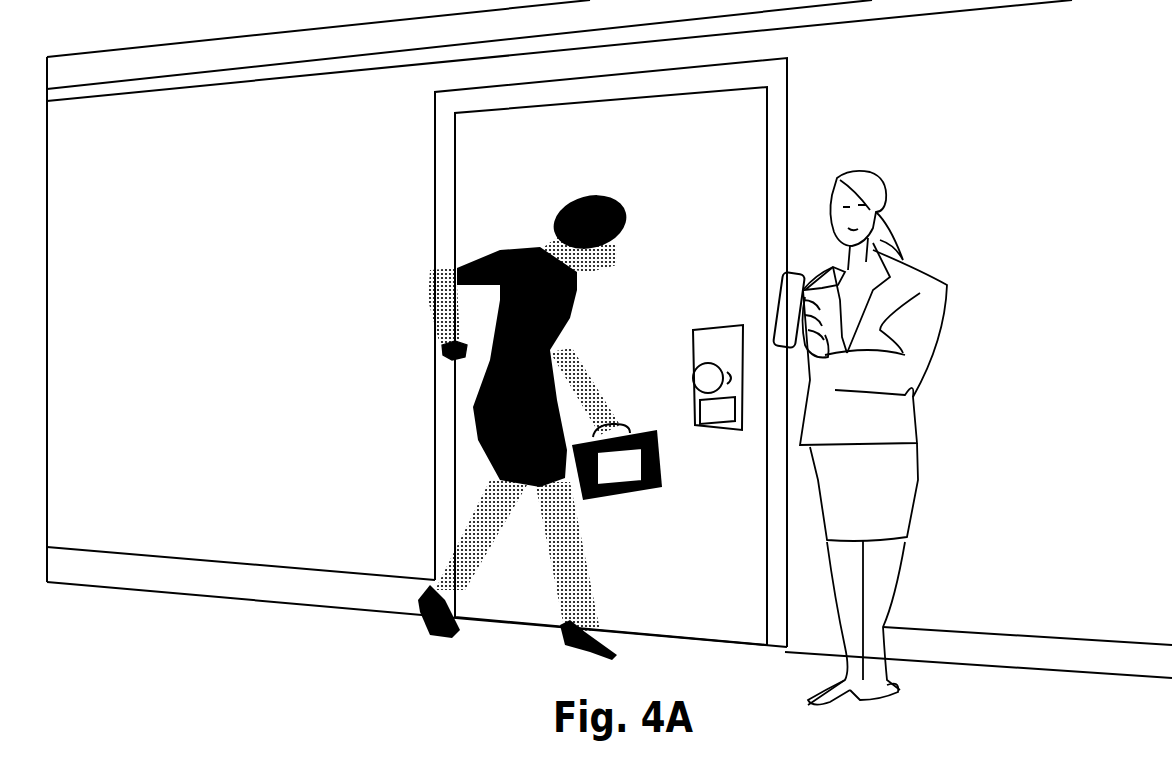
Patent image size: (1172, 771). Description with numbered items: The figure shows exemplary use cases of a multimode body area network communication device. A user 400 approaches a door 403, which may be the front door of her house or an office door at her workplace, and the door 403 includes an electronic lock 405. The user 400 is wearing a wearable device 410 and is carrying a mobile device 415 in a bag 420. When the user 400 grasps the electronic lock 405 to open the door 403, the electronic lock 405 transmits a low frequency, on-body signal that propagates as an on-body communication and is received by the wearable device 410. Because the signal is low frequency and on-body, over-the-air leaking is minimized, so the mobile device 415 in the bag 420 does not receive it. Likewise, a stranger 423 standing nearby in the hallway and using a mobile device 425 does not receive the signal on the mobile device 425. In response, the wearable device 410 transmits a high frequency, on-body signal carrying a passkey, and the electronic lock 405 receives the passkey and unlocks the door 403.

The user 400 is at (556, 210).
The door 403 is at (652, 122).
The electronic lock 405 is at (713, 345).
The wearable device 410 is at (447, 342).
The mobile device 415 is at (640, 477).
The bag 420 is at (633, 497).
The stranger 423 is at (882, 170).
The mobile device 425 is at (803, 270).